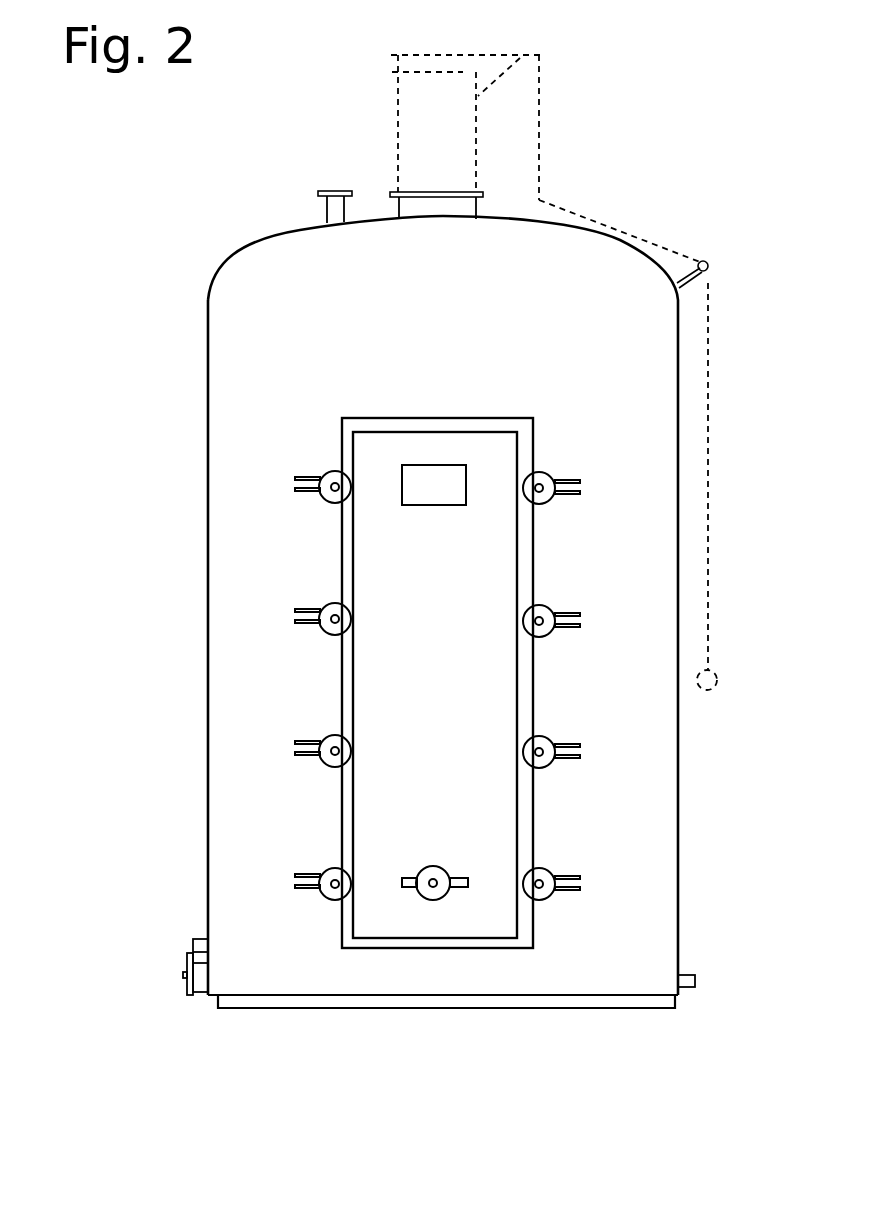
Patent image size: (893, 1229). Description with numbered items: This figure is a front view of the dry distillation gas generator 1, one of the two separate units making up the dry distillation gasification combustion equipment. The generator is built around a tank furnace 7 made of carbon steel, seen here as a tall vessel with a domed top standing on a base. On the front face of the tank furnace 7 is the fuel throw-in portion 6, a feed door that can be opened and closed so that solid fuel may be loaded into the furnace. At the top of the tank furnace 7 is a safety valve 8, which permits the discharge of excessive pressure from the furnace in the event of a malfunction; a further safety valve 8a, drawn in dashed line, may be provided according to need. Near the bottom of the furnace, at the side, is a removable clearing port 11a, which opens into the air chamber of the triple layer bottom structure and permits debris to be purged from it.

The dry distillation gas generator 1 is at (250, 277).
The fuel throw-in portion 6 is at (365, 828).
The tank furnace 7 is at (208, 500).
The safety valve 8 is at (418, 200).
The further safety valve 8a is at (436, 93).
The removable clearing ports 11a is at (188, 996).